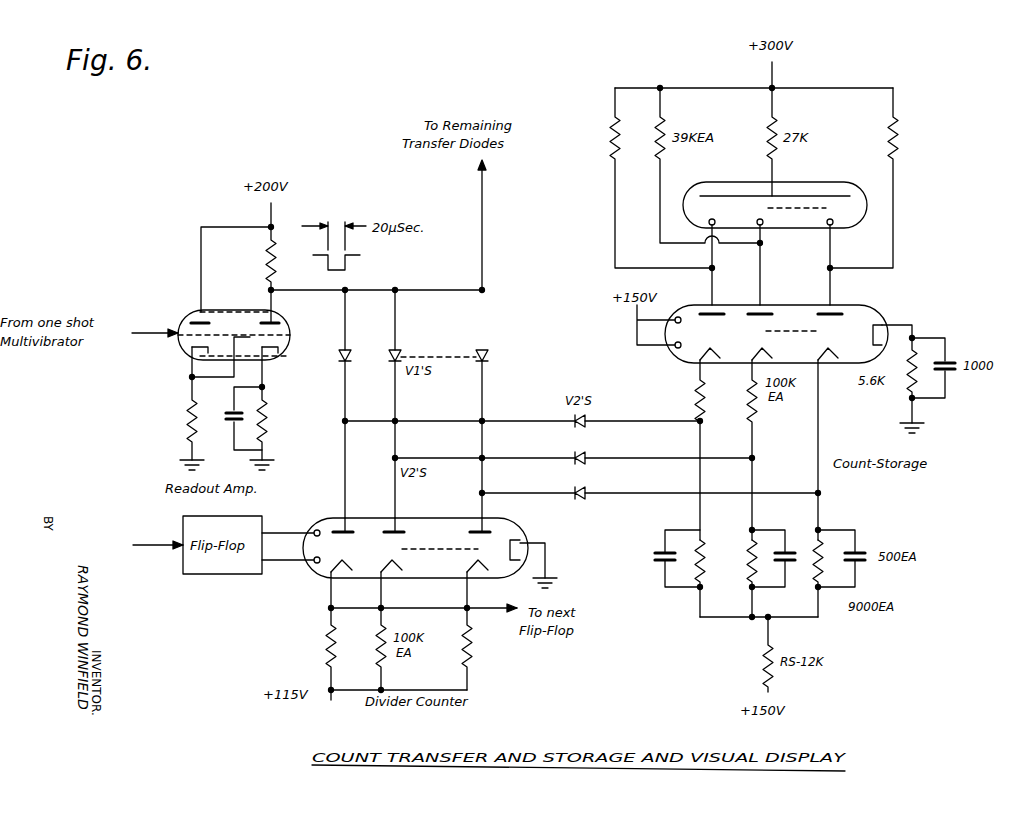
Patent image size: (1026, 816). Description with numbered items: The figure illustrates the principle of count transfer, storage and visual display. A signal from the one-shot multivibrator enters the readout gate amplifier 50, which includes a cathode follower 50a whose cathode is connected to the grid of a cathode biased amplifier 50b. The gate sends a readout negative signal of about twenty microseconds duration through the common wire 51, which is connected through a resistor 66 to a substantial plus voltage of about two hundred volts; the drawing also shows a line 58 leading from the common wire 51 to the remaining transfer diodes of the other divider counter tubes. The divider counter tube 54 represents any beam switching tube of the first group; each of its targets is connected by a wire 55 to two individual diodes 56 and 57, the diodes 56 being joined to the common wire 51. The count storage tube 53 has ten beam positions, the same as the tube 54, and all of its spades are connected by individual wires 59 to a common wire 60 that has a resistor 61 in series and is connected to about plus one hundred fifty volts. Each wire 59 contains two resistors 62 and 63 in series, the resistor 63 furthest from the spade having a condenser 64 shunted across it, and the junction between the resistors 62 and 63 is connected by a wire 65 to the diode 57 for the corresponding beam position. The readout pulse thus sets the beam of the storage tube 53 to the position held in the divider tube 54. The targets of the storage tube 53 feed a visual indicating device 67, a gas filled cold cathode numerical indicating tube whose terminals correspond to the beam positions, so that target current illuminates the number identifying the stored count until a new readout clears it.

The readout gate amplifier 50 is at (227, 376).
The cathode follower 50a is at (184, 352).
The cathode biased amplifier 50b is at (286, 358).
The common wire 51 is at (422, 287).
The count storage tube 53 is at (866, 302).
The divider counter tube 54 is at (314, 577).
The wire 55 is at (343, 455).
The diode 56 is at (347, 350).
The diode 57 is at (576, 426).
The line to remaining transfer diodes 58 is at (484, 234).
The wire 59 is at (820, 438).
The common wire 60 is at (770, 637).
The resistor 61 is at (763, 664).
The resistor 62 is at (150, 340).
The resistor 63 is at (705, 572).
The condenser 64 is at (654, 555).
The wire 65 is at (645, 420).
The resistor 66 is at (266, 258).
The visual indicating device 67 is at (828, 182).